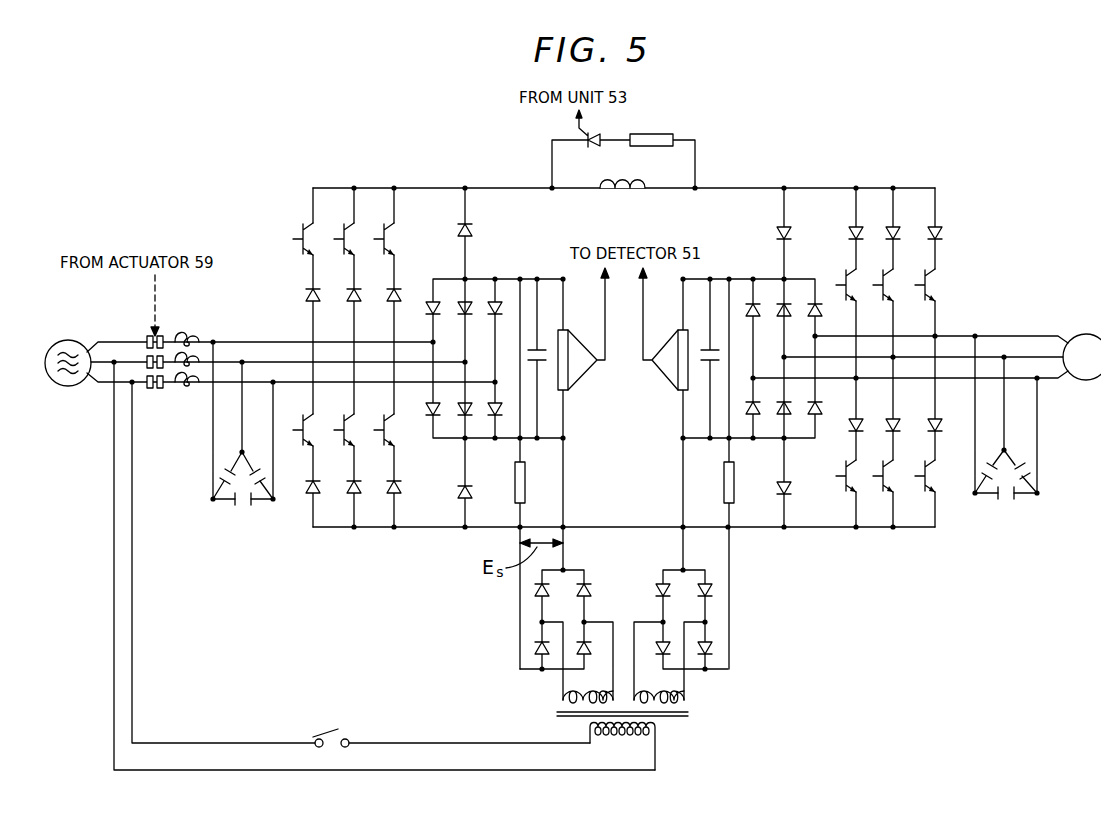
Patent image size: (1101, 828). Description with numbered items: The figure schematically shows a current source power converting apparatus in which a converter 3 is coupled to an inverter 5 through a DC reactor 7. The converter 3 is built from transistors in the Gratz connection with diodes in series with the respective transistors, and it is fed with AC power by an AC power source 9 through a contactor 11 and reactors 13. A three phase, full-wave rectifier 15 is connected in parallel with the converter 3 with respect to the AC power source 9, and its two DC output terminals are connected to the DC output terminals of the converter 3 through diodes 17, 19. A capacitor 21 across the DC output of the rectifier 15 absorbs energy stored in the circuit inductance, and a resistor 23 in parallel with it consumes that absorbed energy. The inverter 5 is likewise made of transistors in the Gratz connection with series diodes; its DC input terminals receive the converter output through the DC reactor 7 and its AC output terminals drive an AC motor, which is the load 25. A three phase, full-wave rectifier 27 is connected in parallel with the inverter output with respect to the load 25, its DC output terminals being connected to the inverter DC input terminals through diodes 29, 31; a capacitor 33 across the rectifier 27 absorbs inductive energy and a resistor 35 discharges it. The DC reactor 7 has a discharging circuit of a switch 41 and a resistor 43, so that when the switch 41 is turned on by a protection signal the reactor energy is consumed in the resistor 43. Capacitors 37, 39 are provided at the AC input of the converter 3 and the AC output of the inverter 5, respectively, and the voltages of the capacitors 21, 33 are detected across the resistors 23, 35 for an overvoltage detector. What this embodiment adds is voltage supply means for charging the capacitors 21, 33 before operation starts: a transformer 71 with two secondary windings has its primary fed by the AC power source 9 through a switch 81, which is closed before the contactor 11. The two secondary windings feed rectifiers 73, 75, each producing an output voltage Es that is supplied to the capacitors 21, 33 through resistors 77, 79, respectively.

The converter 3 is at (362, 566).
The inverter 5 is at (892, 564).
The DC reactor 7 is at (626, 196).
The AC power source 9 is at (70, 340).
The contactor 11 is at (146, 332).
The reactors 13 is at (187, 334).
The three phase, full-wave rectifier 15 is at (417, 473).
The diode 17 is at (474, 231).
The diode 19 is at (474, 492).
The capacitor 21 is at (543, 344).
The resistor 23 is at (565, 392).
The load 25 is at (1084, 334).
The three phase, full-wave rectifier 27 is at (794, 466).
The diode 29 is at (775, 229).
The diode 31 is at (793, 488).
The capacitor 33 is at (708, 344).
The resistor 35 is at (681, 392).
The capacitors 37 is at (226, 502).
The capacitors 39 is at (1017, 497).
The switch 41 is at (594, 148).
The resistor 43 is at (652, 133).
The transformer 71 is at (724, 718).
The rectifier 73 is at (591, 565).
The rectifier 75 is at (635, 565).
The resistor 77 is at (526, 475).
The resistor 79 is at (724, 473).
The switch 81 is at (335, 735).